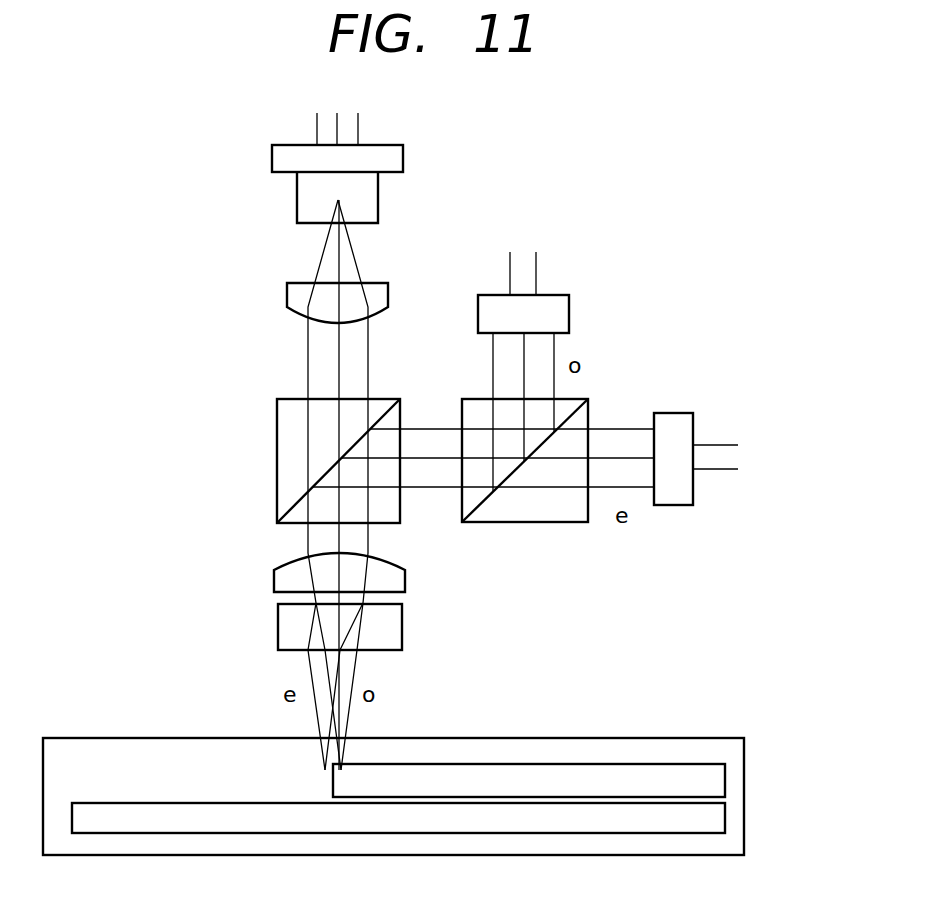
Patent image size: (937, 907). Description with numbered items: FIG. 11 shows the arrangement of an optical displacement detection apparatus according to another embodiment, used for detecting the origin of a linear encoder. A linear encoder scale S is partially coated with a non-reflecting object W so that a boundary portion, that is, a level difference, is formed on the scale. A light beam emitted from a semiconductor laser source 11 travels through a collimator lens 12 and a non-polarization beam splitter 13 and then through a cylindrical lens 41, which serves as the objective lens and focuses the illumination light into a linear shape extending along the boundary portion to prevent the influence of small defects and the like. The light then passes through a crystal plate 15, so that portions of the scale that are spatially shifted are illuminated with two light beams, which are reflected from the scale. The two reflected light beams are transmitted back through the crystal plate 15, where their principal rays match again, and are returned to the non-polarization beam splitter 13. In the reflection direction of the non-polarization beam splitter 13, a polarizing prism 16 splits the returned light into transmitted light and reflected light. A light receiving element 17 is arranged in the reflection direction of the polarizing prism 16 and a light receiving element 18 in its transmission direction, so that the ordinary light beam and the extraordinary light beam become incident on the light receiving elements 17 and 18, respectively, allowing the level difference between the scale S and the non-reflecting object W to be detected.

The semiconductor laser source 11 is at (368, 203).
The collimator lens 12 is at (297, 296).
The non-polarization beam splitter 13 is at (288, 436).
The cylindrical lens 41 is at (283, 580).
The crystal plate 15 is at (290, 632).
The light receiving element 17 is at (550, 308).
The polarizing prism 16 is at (545, 512).
The light receiving element 18 is at (674, 500).
The non-reflecting object W is at (645, 773).
The linear encoder scale S is at (748, 788).